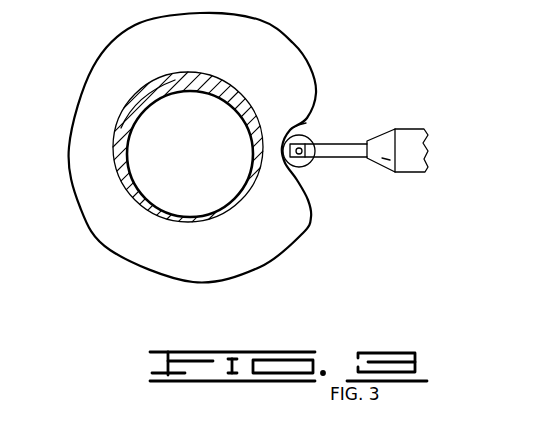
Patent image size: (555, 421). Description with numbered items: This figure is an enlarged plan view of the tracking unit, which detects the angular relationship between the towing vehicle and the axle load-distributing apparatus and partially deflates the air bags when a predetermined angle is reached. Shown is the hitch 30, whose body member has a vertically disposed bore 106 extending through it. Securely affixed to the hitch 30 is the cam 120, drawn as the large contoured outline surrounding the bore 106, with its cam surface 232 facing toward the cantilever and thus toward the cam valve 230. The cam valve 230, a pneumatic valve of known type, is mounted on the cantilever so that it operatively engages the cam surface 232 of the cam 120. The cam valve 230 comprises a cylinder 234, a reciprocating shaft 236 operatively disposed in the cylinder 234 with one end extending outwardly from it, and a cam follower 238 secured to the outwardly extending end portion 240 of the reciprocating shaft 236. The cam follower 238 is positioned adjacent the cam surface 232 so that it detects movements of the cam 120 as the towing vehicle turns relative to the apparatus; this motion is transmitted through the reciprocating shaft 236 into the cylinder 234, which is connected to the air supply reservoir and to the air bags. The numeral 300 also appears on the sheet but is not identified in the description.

The cam 120 is at (258, 37).
The hitch 30 is at (239, 206).
The bore 106 is at (186, 183).
The cam follower 238 is at (300, 167).
The outwardly extending end portion 240 is at (304, 143).
The reciprocating shaft 236 is at (327, 157).
The cam surface 232 is at (306, 124).
The cylinder 234 is at (413, 132).
The cam valve 230 is at (436, 149).
The sheet identifier 300 is at (541, 12).